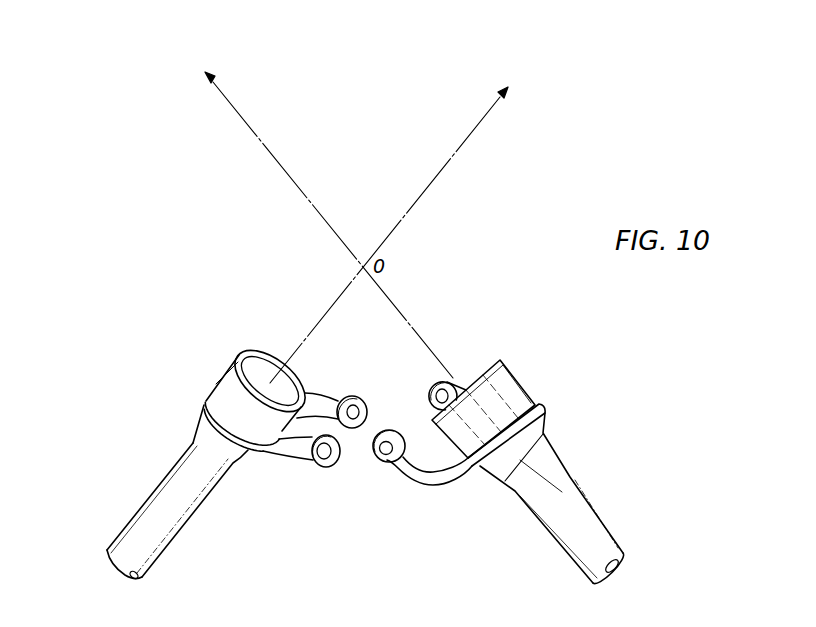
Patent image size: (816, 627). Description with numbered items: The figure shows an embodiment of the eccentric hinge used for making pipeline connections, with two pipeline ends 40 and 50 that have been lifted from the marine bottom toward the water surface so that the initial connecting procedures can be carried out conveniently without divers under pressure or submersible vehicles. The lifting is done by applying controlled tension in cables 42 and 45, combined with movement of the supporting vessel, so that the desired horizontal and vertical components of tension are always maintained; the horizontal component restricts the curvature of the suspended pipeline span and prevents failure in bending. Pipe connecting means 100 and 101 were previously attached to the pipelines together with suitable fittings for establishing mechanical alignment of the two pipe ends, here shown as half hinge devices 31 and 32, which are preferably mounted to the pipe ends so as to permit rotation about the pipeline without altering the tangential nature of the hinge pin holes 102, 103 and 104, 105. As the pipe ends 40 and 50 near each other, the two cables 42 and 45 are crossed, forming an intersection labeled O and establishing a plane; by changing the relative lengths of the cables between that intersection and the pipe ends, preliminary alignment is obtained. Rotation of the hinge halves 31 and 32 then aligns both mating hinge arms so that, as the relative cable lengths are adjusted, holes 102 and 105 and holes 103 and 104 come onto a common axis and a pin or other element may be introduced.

The half hinge device 31 is at (545, 410).
The half hinge device 32 is at (206, 398).
The pipeline end 40 is at (572, 490).
The cable 42 is at (437, 178).
The cable 45 is at (265, 143).
The pipeline end 50 is at (147, 502).
The pipe connecting means 100 is at (515, 387).
The pipe connecting means 101 is at (228, 365).
The hinge pin hole 102 is at (382, 461).
The hinge pin hole 103 is at (443, 382).
The hinge pin hole 104 is at (326, 467).
The hinge pin hole 105 is at (352, 397).